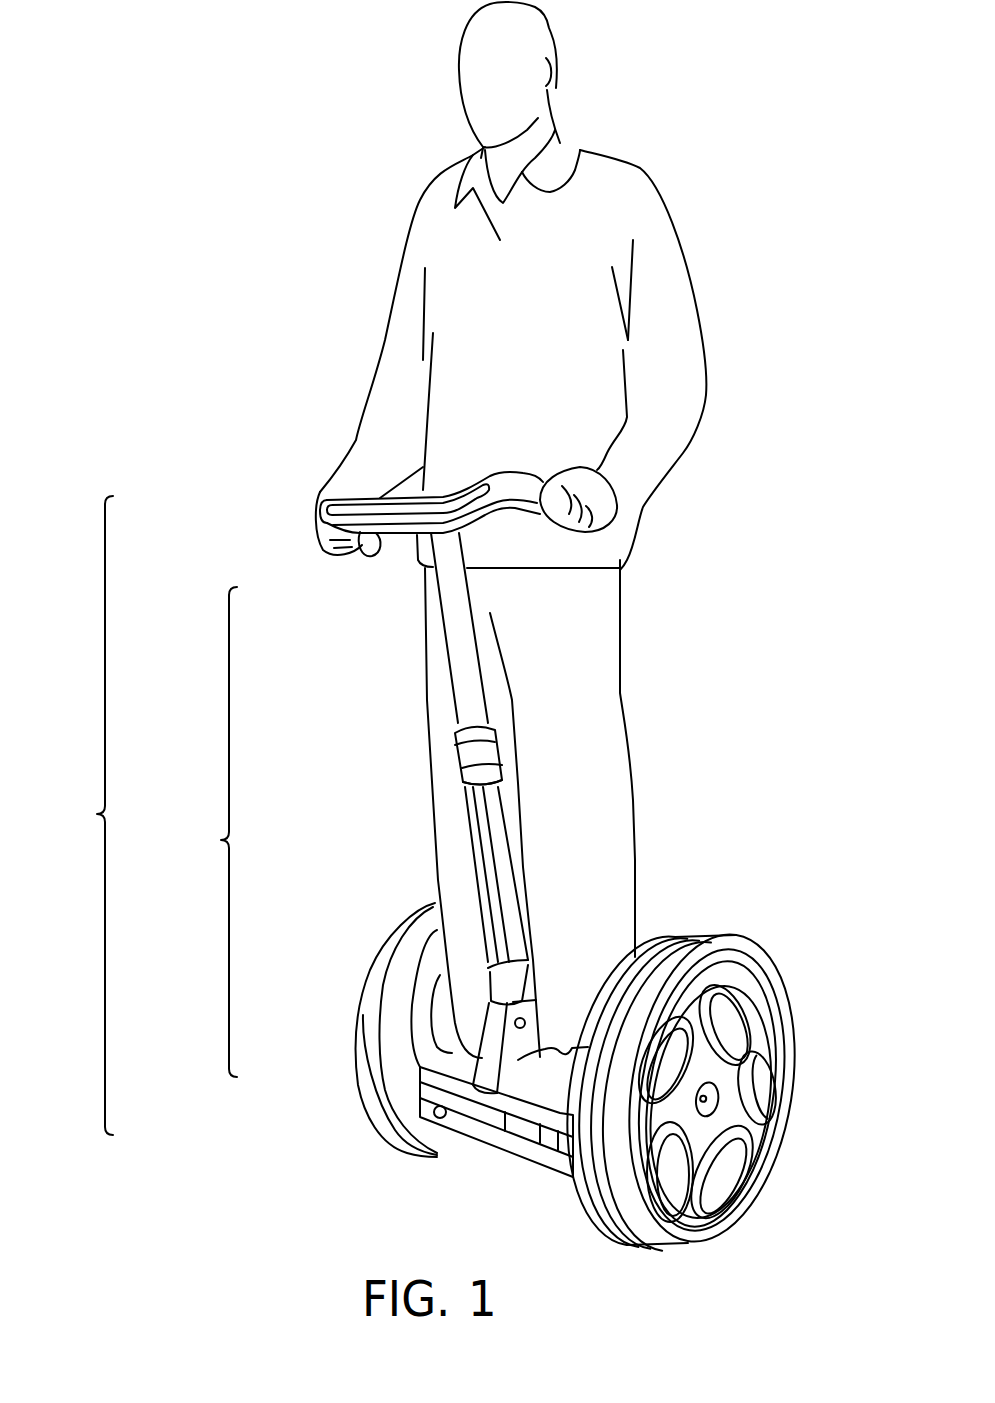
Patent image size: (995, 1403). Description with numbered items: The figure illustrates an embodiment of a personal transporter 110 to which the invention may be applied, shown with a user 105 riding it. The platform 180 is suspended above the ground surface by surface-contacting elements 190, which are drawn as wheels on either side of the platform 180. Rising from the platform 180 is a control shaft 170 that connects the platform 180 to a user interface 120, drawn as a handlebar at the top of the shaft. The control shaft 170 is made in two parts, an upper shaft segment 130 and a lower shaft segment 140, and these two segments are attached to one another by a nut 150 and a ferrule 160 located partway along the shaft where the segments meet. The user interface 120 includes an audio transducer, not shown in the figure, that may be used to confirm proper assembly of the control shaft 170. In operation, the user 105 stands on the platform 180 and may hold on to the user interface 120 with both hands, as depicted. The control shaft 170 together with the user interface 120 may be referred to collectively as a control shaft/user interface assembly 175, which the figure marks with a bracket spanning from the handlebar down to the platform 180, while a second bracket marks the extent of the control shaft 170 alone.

The user 105 is at (607, 698).
The personal transporter 110 is at (719, 557).
The user interface 120 is at (340, 520).
The upper shaft segment 130 is at (457, 632).
The lower shaft segment 140 is at (482, 878).
The nut 150 is at (467, 733).
The ferrule 160 is at (468, 760).
The control shaft 170 is at (194, 832).
The control shaft/user interface assembly 175 is at (74, 815).
The platform 180 is at (522, 1142).
The surface-contacting elements 190 is at (767, 1137).